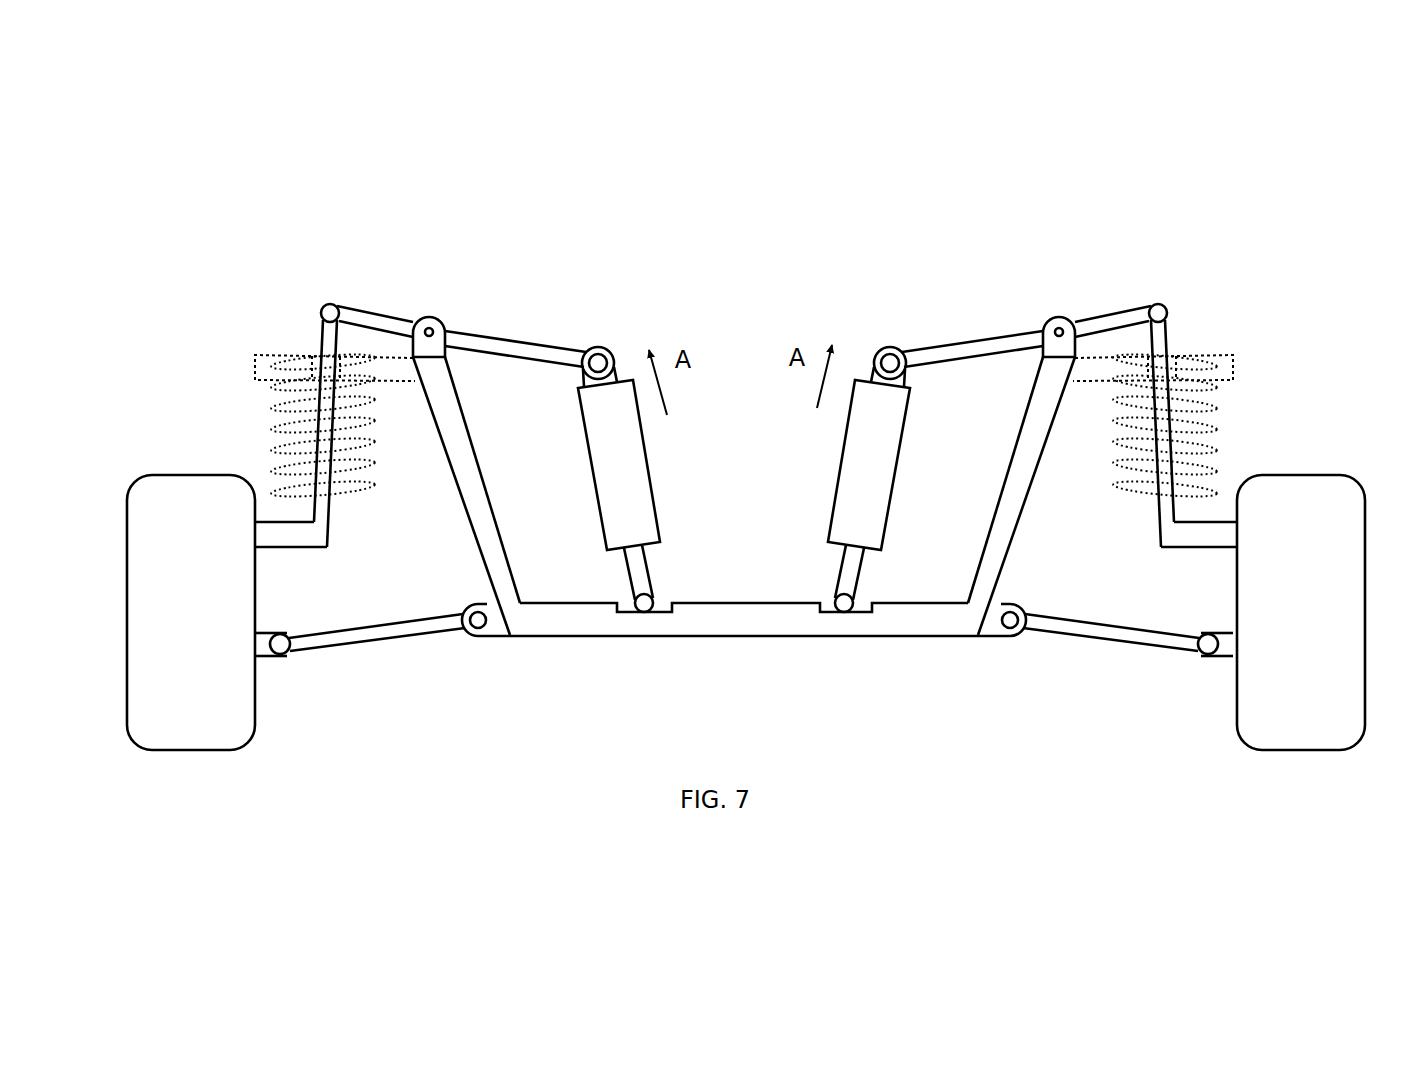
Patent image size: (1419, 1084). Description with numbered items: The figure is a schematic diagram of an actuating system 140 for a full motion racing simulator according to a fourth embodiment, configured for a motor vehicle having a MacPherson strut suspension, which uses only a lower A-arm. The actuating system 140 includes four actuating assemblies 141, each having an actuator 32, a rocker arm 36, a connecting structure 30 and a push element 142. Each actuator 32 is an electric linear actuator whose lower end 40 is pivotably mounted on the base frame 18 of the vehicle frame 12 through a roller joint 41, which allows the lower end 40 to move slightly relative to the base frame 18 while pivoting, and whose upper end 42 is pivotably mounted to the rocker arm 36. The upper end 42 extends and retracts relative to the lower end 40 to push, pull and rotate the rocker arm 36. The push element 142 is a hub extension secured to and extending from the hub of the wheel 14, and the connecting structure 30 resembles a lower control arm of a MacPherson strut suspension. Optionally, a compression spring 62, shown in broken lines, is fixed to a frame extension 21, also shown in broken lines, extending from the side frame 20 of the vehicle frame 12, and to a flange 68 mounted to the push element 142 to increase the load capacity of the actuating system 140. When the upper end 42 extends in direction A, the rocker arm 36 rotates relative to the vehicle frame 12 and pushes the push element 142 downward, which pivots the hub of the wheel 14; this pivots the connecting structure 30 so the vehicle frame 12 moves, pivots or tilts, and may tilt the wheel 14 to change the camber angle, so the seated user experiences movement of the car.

The actuating system 140 is at (752, 207).
The actuating assembly 141 is at (405, 270).
The push element 142 is at (272, 548).
The vehicle frame 12 is at (853, 654).
The wheel 14 is at (210, 752).
The base frame 18 is at (735, 638).
The side frame 20 is at (480, 480).
The frame extension 21 is at (275, 356).
The connecting structure 30 is at (368, 645).
The actuator 32 is at (838, 478).
The rocker arm 36 is at (500, 326).
The lower end 40 is at (654, 598).
The roller joint 41 is at (625, 613).
The upper end 42 is at (603, 350).
The compression spring 62 is at (253, 435).
The flange 68 is at (253, 492).